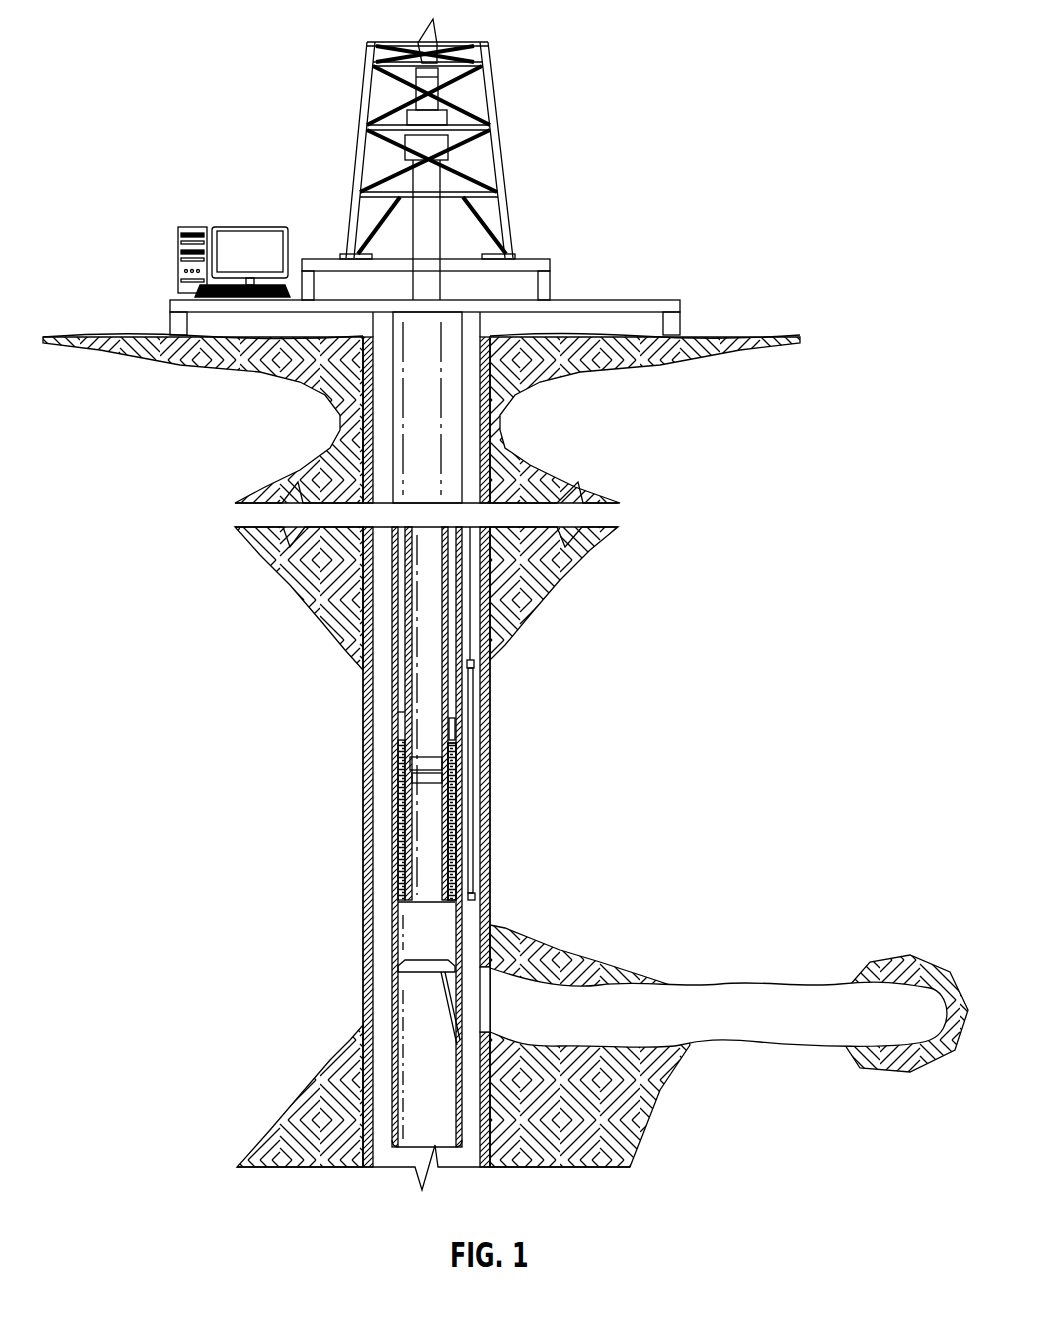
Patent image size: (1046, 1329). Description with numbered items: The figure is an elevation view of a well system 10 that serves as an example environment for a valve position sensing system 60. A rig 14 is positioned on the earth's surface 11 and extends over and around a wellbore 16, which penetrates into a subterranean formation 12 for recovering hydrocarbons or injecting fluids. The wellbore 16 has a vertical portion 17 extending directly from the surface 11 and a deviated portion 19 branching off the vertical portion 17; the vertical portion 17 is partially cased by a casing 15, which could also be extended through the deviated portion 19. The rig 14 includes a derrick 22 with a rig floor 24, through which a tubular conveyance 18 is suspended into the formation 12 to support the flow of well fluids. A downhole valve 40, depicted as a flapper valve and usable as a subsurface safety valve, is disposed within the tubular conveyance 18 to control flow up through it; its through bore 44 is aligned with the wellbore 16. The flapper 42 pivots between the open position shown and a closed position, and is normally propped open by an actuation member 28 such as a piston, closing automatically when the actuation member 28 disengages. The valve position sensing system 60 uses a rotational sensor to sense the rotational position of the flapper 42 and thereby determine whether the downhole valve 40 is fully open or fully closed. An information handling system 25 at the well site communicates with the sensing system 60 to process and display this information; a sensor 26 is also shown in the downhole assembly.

The well system 10 is at (753, 74).
The earth's surface 11 is at (775, 335).
The subterranean formation 12 is at (620, 1127).
The rig 14 is at (445, 139).
The casing 15 is at (488, 620).
The wellbore 16 is at (487, 408).
The vertical portion 17 is at (486, 935).
The tubular conveyance 18 is at (402, 372).
The deviated portion 19 is at (675, 990).
The derrick 22 is at (355, 160).
The rig floor 24 is at (533, 258).
The information handling system 25 is at (195, 225).
The sensor 26 is at (474, 758).
The actuation member 28 is at (456, 815).
The downhole valve 40 is at (364, 837).
The flapper 42 is at (443, 990).
The through bore 44 is at (428, 904).
The valve position sensing system 60 is at (427, 837).